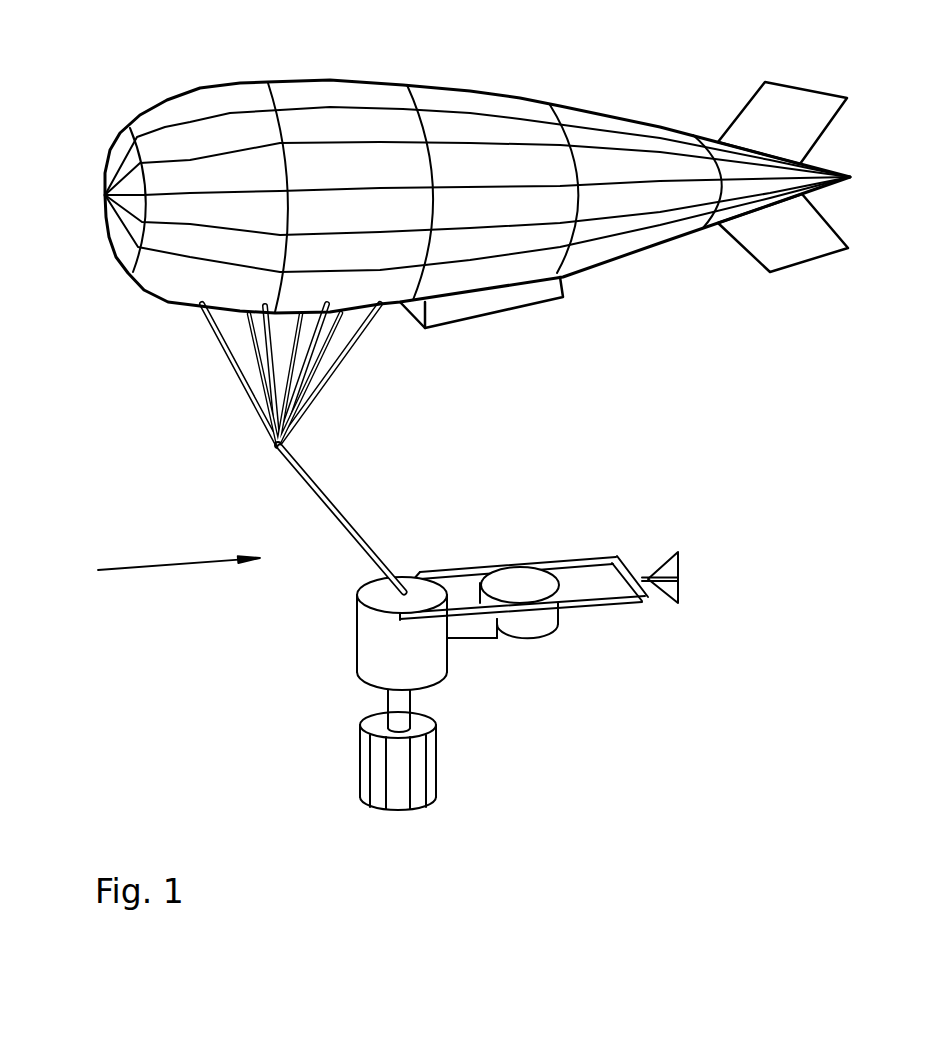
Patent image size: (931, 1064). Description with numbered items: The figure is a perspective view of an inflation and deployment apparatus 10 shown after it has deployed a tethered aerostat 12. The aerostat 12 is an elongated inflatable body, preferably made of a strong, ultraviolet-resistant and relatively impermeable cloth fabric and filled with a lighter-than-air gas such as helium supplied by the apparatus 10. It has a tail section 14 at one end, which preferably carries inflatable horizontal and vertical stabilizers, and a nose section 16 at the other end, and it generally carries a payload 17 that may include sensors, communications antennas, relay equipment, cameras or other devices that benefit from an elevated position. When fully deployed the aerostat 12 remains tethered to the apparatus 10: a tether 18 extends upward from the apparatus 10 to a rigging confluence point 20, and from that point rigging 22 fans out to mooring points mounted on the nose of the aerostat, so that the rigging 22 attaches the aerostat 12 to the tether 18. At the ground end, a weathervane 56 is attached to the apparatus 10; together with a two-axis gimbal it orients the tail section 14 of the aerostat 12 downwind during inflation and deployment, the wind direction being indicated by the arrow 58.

The apparatus 10 is at (357, 637).
The aerostat 12 is at (523, 98).
The tail section 14 is at (817, 257).
The nose section 16 is at (103, 153).
The payload 17 is at (498, 315).
The tether 18 is at (332, 497).
The rigging confluence point 20 is at (278, 447).
The rigging 22 is at (232, 372).
The weathervane 56 is at (680, 591).
The arrow 58 is at (170, 566).